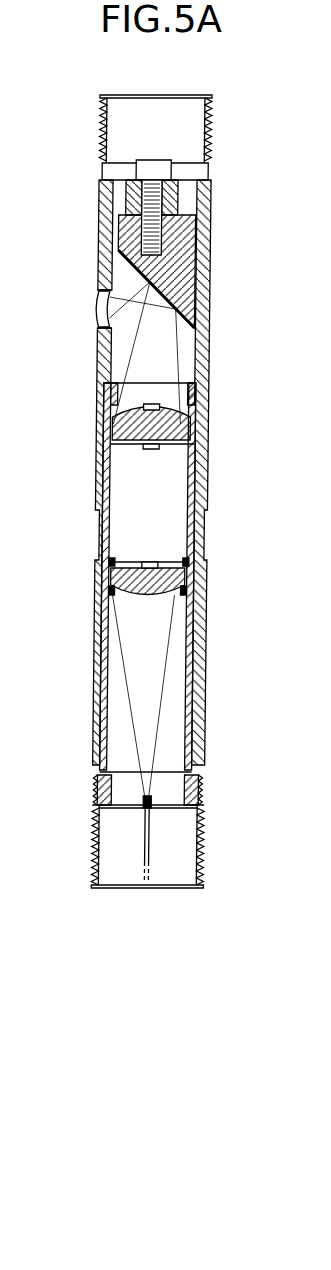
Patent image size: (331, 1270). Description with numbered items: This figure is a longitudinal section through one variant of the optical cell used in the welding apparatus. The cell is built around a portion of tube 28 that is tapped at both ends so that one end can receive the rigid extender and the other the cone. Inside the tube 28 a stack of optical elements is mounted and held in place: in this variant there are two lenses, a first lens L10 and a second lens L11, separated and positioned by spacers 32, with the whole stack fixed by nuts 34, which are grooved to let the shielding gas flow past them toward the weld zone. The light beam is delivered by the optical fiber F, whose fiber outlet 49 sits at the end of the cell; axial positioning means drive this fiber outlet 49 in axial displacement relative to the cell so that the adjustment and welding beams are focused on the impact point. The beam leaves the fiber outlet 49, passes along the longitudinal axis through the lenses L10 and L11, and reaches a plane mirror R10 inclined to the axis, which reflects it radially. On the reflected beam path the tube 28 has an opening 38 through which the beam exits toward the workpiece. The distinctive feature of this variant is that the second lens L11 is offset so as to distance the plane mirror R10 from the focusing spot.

The plane mirror R10 is at (124, 270).
The opening 38 is at (107, 318).
The tube 28 is at (207, 354).
The lens L11 is at (120, 447).
The lens L10 is at (111, 560).
The spacers 32 is at (193, 596).
The nuts 34 is at (116, 781).
The fiber outlet 49 is at (151, 822).
The optical fiber F is at (151, 852).